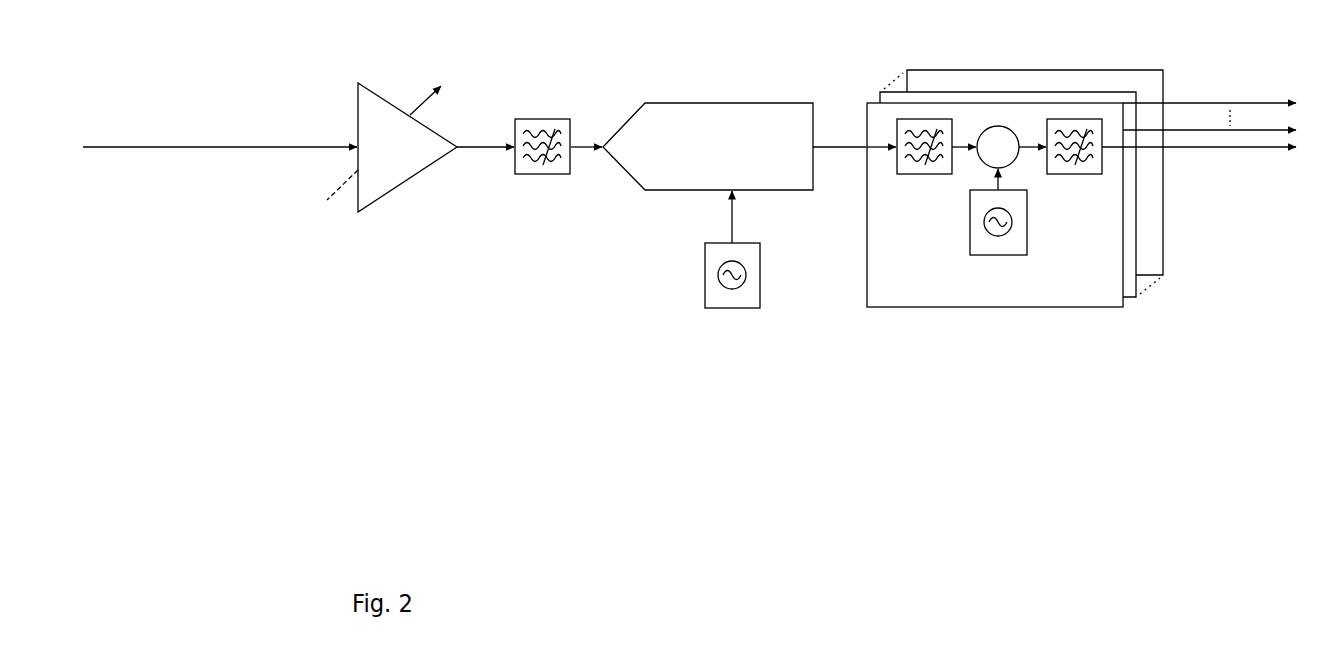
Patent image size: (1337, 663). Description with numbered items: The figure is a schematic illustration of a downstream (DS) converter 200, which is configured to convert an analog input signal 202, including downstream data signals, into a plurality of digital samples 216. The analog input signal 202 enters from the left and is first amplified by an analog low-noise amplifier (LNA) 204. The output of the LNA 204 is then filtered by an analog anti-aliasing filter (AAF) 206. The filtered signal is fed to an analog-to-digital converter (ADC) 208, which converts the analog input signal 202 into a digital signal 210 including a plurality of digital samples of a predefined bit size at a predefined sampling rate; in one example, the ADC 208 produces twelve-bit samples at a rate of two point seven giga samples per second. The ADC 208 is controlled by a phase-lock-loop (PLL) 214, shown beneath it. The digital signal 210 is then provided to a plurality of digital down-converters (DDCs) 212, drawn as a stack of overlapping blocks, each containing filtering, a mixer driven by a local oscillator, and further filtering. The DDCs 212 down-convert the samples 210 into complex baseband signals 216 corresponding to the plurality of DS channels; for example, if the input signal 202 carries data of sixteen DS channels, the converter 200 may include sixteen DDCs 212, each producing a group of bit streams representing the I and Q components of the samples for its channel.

The DS converter 200 is at (583, 414).
The analog input signal 202 is at (243, 150).
The analog low-noise amplifier 204 is at (363, 85).
The analog anti-aliasing-filter 206 is at (533, 116).
The analog-to-digital converter 208 is at (736, 102).
The digital signal 210 is at (829, 145).
The digital down-converters 212 is at (1017, 324).
The phase-lock-loop 214 is at (737, 302).
The digital samples 216 is at (1257, 158).